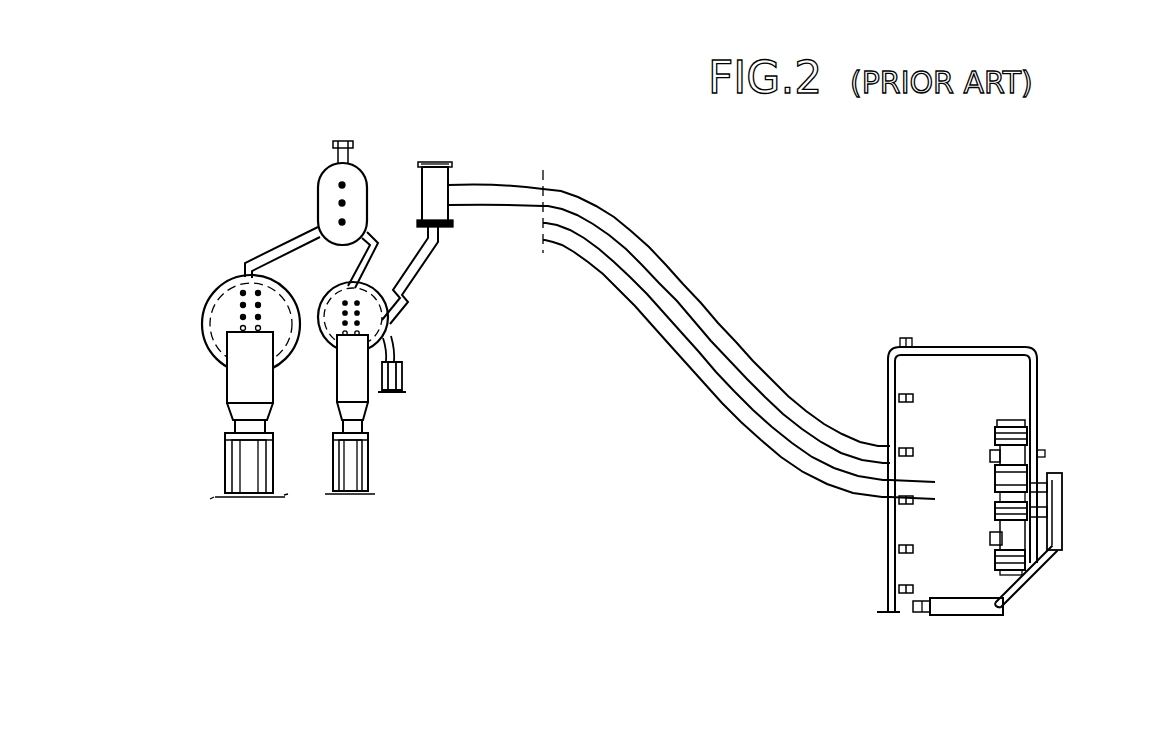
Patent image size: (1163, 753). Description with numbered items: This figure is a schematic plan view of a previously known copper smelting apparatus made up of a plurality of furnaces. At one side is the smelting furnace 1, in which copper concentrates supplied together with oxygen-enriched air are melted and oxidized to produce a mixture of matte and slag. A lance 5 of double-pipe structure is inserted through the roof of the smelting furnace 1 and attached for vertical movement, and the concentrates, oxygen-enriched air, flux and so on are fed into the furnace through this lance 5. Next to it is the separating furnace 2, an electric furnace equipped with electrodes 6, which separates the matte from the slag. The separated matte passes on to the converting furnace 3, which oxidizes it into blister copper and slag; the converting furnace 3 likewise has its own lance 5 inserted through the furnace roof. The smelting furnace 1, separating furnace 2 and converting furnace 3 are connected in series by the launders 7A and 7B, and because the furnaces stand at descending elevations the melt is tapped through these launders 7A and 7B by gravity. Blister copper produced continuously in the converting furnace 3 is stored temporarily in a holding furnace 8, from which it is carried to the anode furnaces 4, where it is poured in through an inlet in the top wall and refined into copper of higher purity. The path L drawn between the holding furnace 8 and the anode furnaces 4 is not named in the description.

The smelting furnace 1 is at (211, 356).
The separating furnace 2 is at (312, 186).
The converting furnace 3 is at (396, 336).
The anode furnace 4 is at (1018, 417).
The lance 5 is at (232, 312).
The electrodes 6 is at (351, 199).
The launder 7A is at (276, 244).
The launder 7B is at (352, 263).
The holding furnace 8 is at (461, 172).
The tube lines L is at (716, 314).